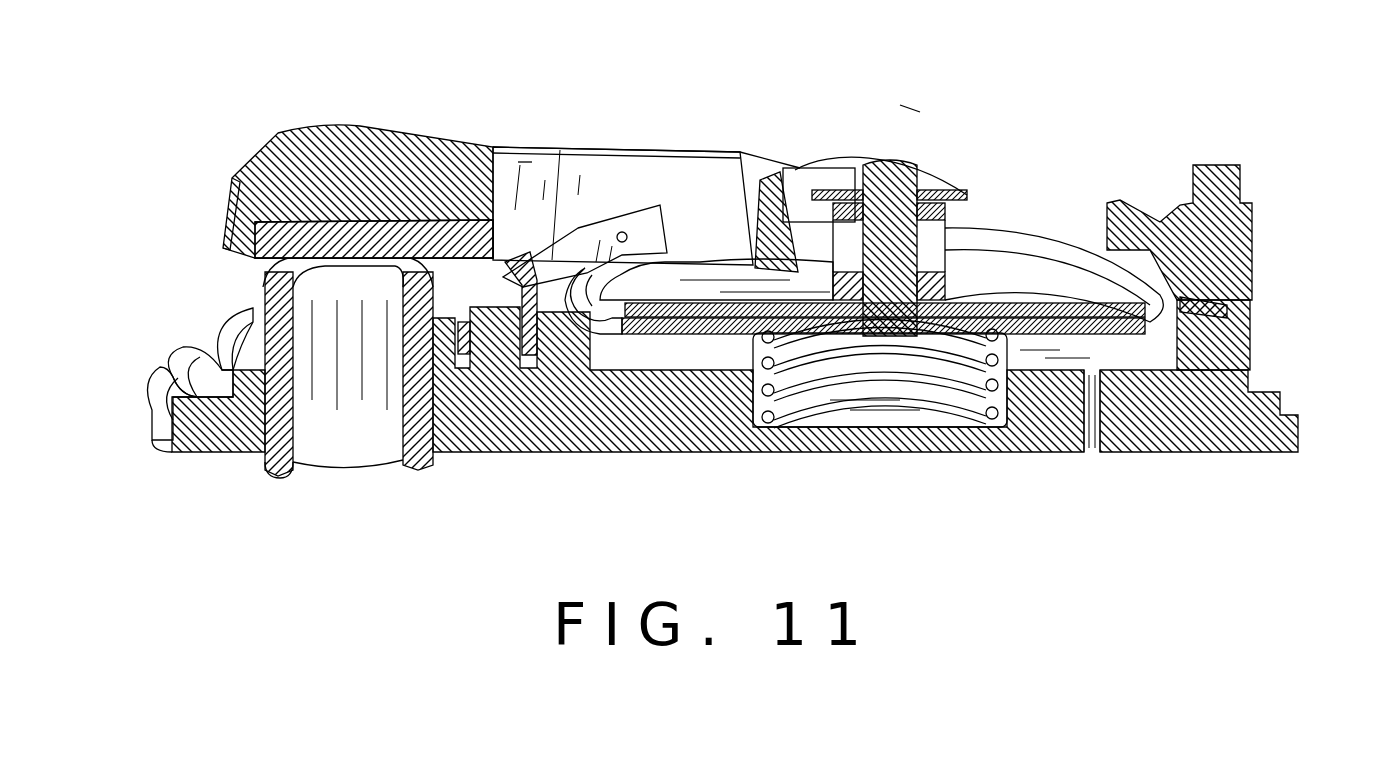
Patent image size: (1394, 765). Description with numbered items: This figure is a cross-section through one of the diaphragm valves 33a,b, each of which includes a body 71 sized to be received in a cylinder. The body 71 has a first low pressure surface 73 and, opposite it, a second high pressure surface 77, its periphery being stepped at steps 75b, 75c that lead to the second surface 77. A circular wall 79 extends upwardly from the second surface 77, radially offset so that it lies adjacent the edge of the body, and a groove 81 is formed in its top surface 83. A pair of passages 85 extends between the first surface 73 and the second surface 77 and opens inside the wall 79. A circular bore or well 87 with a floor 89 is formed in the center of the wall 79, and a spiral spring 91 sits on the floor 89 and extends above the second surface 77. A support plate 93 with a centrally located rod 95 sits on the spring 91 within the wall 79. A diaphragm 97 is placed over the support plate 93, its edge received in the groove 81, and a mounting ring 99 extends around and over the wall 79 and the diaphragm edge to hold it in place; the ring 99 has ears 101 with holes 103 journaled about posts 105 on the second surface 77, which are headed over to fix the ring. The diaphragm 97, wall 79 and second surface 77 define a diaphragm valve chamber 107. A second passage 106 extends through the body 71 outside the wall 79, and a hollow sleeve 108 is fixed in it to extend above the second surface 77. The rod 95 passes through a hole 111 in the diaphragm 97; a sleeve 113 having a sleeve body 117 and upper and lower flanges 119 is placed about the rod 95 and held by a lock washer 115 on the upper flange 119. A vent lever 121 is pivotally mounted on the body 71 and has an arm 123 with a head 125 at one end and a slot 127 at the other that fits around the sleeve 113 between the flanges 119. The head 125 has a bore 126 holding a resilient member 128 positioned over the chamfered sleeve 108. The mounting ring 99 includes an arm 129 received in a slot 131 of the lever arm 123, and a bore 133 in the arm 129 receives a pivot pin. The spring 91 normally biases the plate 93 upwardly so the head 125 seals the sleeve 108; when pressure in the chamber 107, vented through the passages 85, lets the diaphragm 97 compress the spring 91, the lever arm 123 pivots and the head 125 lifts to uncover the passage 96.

The body 71 is at (1290, 388).
The first low pressure surface 73 is at (847, 452).
The step 75b is at (200, 368).
The step 75c is at (163, 387).
The second high pressure surface 77 is at (244, 332).
The circular wall 79 is at (1250, 332).
The groove 81 is at (1250, 290).
The top surface 83 is at (1250, 250).
The passages 85 is at (1092, 445).
The circular bore or well 87 is at (999, 406).
The floor 89 is at (802, 408).
The spiral spring 91 is at (920, 398).
The support plate 93 is at (760, 336).
The rod 95 is at (917, 167).
The passage 96 is at (288, 463).
The diaphragm 97 is at (1010, 288).
The mounting ring 99 is at (432, 376).
The ears 101 is at (403, 303).
The holes 103 is at (466, 346).
The posts 105 is at (528, 272).
The second passage 106 is at (263, 454).
The diaphragm valve chamber 107 is at (1182, 398).
The hollow sleeve 108 is at (262, 287).
The hole 111 is at (985, 288).
The sleeve 113 is at (935, 230).
The lock washer 115 is at (850, 195).
The sleeve body 117 is at (808, 210).
The flanges 119 is at (950, 207).
The vent lever 121 is at (474, 133).
The arm 123 is at (655, 140).
The head 125 is at (333, 127).
The bore 126 is at (226, 178).
The slot 127 is at (780, 180).
The resilient member 128 is at (320, 223).
The arm 129 is at (598, 270).
The slot 131 is at (525, 162).
The bore 133 is at (624, 238).
The diaphragm valves 33a,b is at (912, 98).